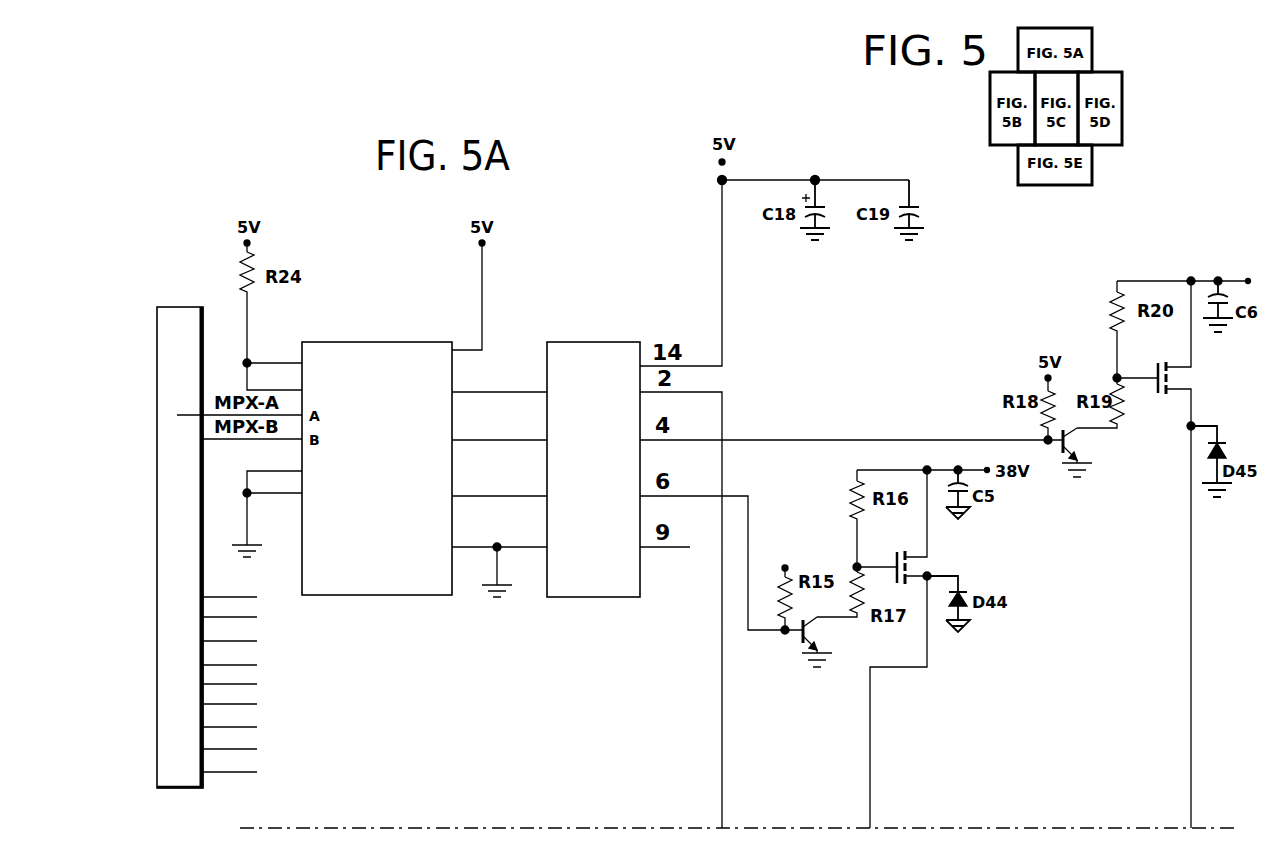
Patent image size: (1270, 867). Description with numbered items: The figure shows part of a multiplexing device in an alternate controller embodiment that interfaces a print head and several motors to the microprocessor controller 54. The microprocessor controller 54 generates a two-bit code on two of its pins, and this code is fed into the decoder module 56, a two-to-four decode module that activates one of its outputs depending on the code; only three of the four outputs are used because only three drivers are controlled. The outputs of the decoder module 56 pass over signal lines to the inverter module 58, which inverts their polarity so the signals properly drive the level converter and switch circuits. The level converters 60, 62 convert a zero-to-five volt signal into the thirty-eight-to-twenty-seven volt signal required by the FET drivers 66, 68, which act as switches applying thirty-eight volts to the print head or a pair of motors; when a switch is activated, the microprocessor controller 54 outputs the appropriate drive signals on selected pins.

The microprocessor controller 54 is at (190, 307).
The decoder module 56 is at (379, 342).
The inverter module 58 is at (598, 342).
The level converter 60 is at (1090, 452).
The level converter 62 is at (830, 642).
The FET driver 66 is at (1173, 554).
The FET driver 68 is at (913, 649).